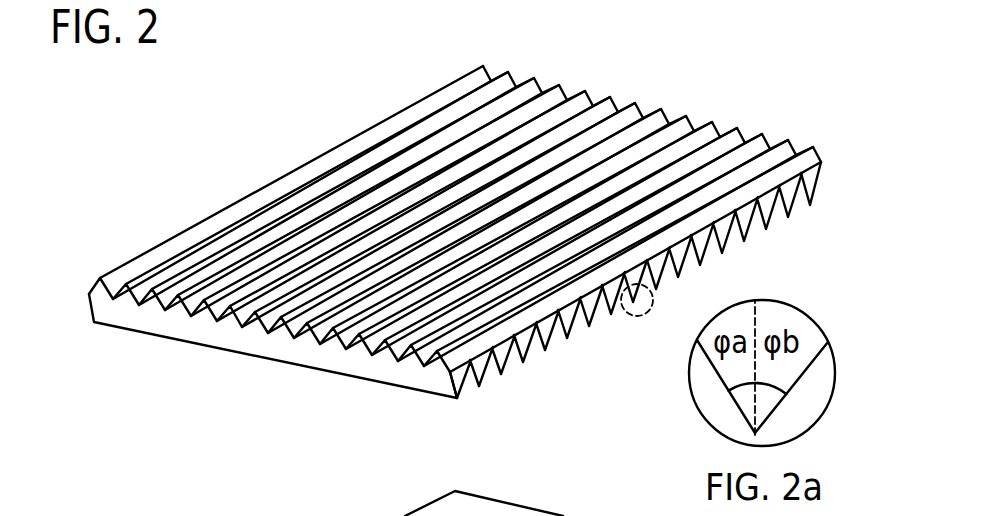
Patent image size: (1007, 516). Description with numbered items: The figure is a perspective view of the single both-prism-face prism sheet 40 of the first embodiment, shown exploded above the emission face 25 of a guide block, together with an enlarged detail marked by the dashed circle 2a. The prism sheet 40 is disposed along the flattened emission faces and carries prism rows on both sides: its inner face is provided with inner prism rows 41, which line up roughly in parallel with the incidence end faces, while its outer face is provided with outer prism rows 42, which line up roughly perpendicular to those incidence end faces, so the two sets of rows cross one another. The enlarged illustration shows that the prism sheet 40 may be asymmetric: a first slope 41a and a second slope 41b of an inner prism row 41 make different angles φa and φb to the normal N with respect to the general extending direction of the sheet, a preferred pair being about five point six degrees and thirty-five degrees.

In FIG. 2, the both-prism-face prism sheet 40 is at (477, 202).
In FIG. 2, the outer prism rows 42 is at (685, 143).
In FIG. 2, the inner prism rows 41 is at (748, 236).
In FIG. 2a, the first slope 41a is at (723, 383).
In FIG. 2a, the second slope 41b is at (805, 381).
In FIG. 2a, the normal line N is at (756, 326).
In FIG. 2, the detail region of FIG. 2a is at (666, 324).
In FIG. 2, the emission face 25 is at (393, 515).